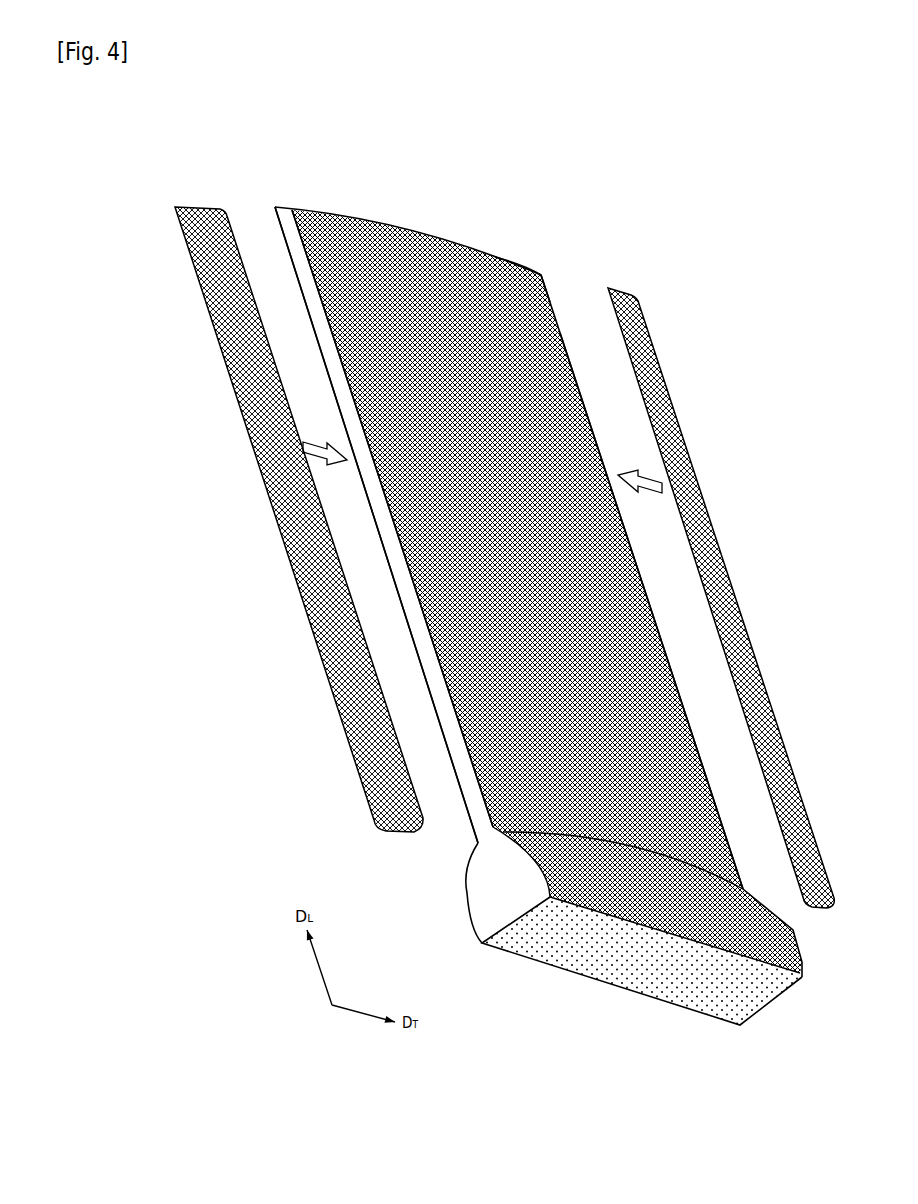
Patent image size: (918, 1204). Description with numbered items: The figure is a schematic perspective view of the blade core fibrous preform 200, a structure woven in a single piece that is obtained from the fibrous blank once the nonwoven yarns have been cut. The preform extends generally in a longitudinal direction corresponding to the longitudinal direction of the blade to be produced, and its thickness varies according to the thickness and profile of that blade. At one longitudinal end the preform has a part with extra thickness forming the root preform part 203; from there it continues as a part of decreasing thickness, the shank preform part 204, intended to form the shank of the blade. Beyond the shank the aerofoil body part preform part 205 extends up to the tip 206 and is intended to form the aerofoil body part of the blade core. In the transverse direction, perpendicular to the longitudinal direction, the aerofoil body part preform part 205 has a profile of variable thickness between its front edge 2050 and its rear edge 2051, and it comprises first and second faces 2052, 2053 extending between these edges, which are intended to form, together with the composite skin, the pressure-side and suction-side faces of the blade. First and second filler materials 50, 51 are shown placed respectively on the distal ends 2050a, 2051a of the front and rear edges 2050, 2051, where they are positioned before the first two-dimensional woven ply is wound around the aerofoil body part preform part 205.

The blade core fibrous preform 200 is at (509, 582).
The root preform part 203 is at (497, 895).
The shank preform part 204 is at (485, 832).
The aerofoil body part preform part 205 is at (657, 684).
The tip 206 is at (413, 230).
The front edge 2050 is at (440, 630).
The distal end of the front edge 2050a is at (383, 512).
The rear edge 2051 is at (590, 436).
The distal end of the rear edge 2051a is at (635, 550).
The first face 2052 is at (547, 338).
The second face 2053 is at (395, 596).
The first filler material 50 is at (204, 208).
The second filler material 51 is at (619, 288).